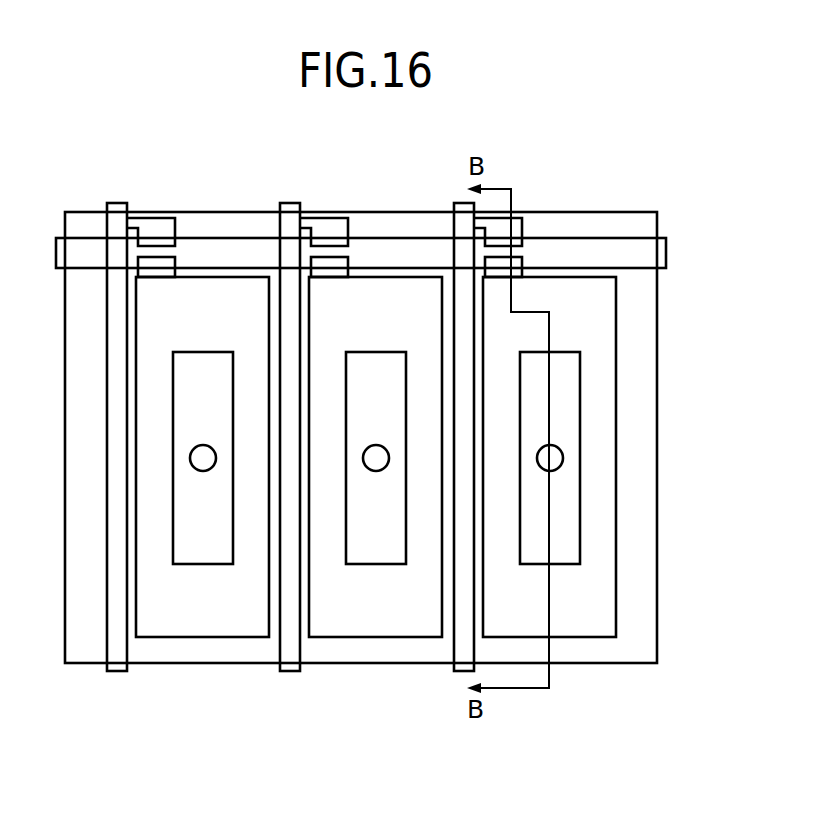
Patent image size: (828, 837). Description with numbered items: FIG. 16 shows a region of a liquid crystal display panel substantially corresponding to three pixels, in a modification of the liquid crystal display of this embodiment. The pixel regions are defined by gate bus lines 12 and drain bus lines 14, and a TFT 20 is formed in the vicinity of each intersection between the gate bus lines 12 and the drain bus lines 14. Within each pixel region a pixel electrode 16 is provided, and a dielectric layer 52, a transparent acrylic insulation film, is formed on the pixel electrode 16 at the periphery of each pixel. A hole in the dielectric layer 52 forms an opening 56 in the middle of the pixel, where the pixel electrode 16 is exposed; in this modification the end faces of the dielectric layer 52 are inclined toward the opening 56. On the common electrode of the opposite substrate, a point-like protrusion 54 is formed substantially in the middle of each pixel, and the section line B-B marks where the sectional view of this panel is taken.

The gate bus line 12 is at (666, 248).
The drain bus line 14 is at (460, 203).
The pixel electrode 16 is at (607, 317).
The TFT 20 is at (526, 196).
The dielectric layer 52 is at (637, 500).
The point-like protrusion 54 is at (552, 455).
The opening 56 is at (568, 545).